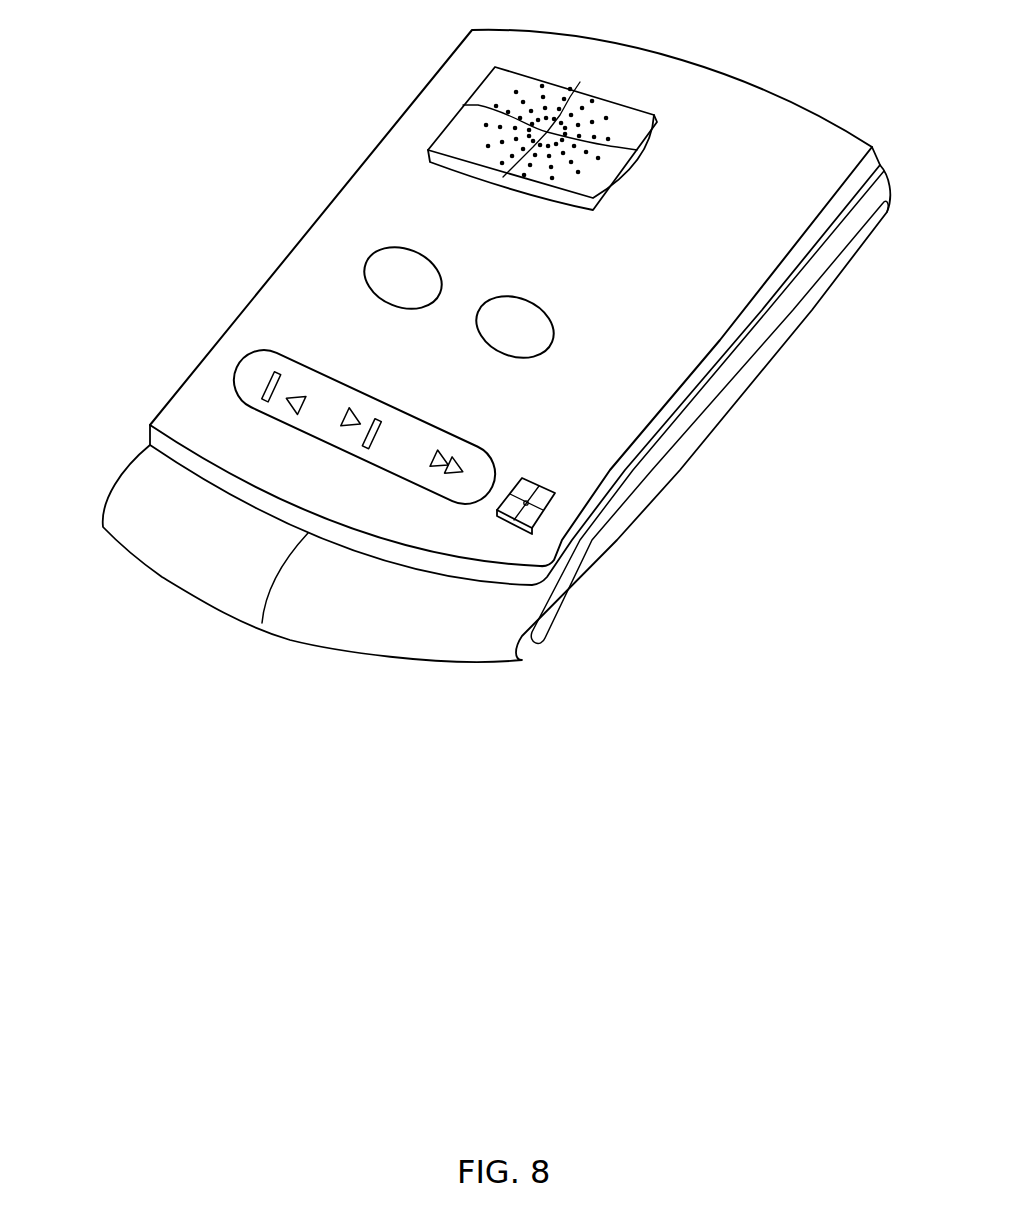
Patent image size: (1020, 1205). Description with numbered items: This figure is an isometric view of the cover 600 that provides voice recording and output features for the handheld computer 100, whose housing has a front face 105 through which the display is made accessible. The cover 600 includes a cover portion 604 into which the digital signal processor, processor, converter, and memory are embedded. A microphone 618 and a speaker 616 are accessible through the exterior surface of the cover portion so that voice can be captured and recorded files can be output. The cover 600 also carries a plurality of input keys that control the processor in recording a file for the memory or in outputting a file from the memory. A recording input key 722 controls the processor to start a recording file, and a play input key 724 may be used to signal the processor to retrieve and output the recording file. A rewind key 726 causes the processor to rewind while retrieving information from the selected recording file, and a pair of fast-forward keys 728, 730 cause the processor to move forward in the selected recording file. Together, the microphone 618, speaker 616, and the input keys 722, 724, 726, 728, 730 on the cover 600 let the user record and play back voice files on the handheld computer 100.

The handheld computer 100 is at (495, 750).
The front face 105 is at (335, 585).
The cover 600 is at (362, 128).
The cover portion 604 is at (668, 327).
The speaker 616 is at (548, 520).
The microphone 618 is at (620, 107).
The recording input key 722 is at (363, 270).
The play input key 724 is at (475, 325).
The rewind key 726 is at (260, 387).
The fast-forward key 728 is at (347, 428).
The fast-forward key 730 is at (497, 462).